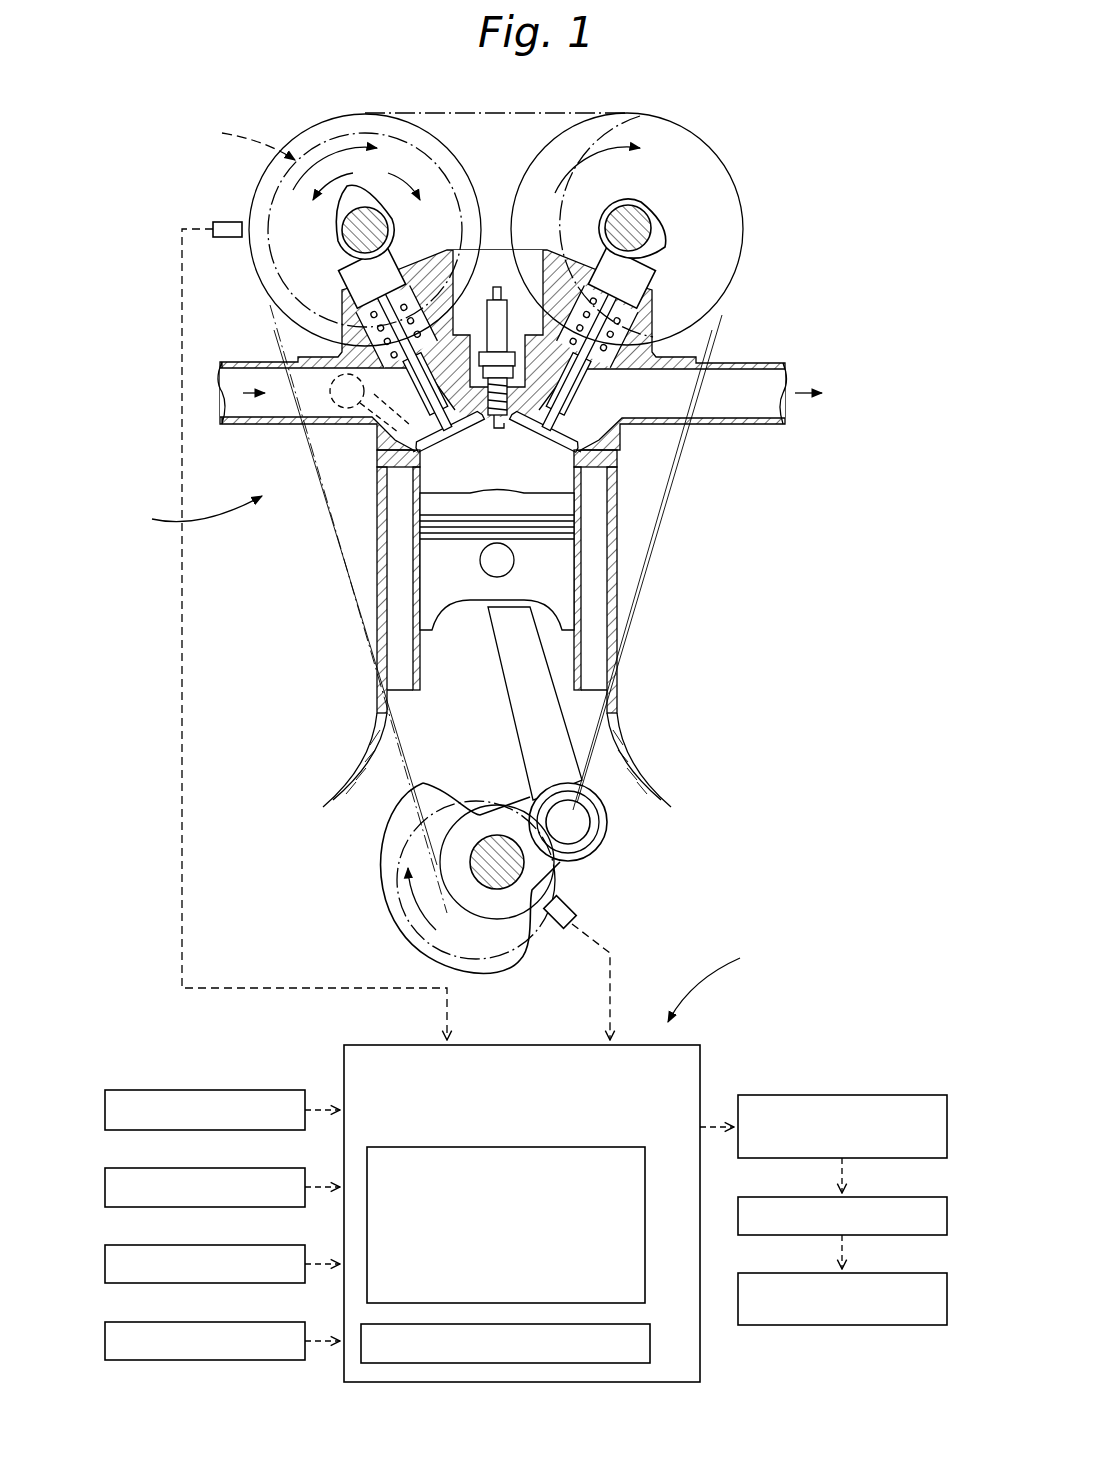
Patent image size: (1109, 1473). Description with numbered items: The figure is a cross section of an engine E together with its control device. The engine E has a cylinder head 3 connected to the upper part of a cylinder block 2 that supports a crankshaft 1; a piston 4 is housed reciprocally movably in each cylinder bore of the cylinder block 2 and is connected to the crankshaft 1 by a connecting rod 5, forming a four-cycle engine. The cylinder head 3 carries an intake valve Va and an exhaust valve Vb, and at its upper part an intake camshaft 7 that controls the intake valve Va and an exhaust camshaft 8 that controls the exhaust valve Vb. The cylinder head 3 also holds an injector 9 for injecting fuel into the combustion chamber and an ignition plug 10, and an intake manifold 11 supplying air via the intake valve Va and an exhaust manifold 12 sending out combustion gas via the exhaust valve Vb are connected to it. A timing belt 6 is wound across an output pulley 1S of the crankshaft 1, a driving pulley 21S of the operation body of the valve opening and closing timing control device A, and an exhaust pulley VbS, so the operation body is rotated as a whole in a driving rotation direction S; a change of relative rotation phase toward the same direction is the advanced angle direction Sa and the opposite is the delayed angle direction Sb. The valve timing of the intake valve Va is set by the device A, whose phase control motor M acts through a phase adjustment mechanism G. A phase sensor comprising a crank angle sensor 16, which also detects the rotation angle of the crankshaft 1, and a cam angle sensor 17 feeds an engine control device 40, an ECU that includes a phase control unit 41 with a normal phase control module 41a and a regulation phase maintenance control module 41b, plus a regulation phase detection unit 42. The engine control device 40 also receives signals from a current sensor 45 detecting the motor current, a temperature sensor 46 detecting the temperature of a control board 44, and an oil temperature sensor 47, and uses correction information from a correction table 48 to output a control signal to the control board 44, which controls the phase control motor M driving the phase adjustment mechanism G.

The crankshaft 1 is at (495, 833).
The output pulley 1S is at (440, 945).
The cylinder block 2 is at (618, 600).
The cylinder head 3 is at (618, 435).
The piston 4 is at (562, 553).
The connecting rod 5 is at (503, 658).
The timing belt 6 is at (337, 564).
The intake camshaft 7 is at (352, 247).
The exhaust camshaft 8 is at (648, 205).
The injector 9 is at (368, 430).
The ignition plug 10 is at (497, 285).
The intake manifold 11 is at (245, 362).
The exhaust manifold 12 is at (735, 363).
The crank angle sensor 16 is at (578, 903).
The cam angle sensor 17 is at (232, 222).
The driving pulley 21S is at (443, 142).
The engine control device 40 is at (700, 1082).
The phase control unit 41 is at (600, 1147).
The normal phase control module 41a is at (630, 1213).
The regulation phase maintenance control module 41b is at (630, 1270).
The regulation phase detection unit 42 is at (650, 1343).
The control board 44 is at (947, 1125).
The current sensor 45 is at (105, 1110).
The temperature sensor 46 is at (105, 1187).
The oil temperature sensor 47 is at (105, 1264).
The correction table 48 is at (105, 1341).
The valve opening and closing timing control device A is at (490, 568).
The engine E is at (196, 517).
The phase adjustment mechanism G is at (947, 1305).
The phase control motor M is at (947, 1215).
The driving rotation direction S is at (335, 153).
The advanced angle direction Sa is at (412, 202).
The delayed angle direction Sb is at (322, 202).
The intake valve Va is at (465, 437).
The exhaust valve Vb is at (547, 418).
The exhaust pulley VbS is at (548, 142).